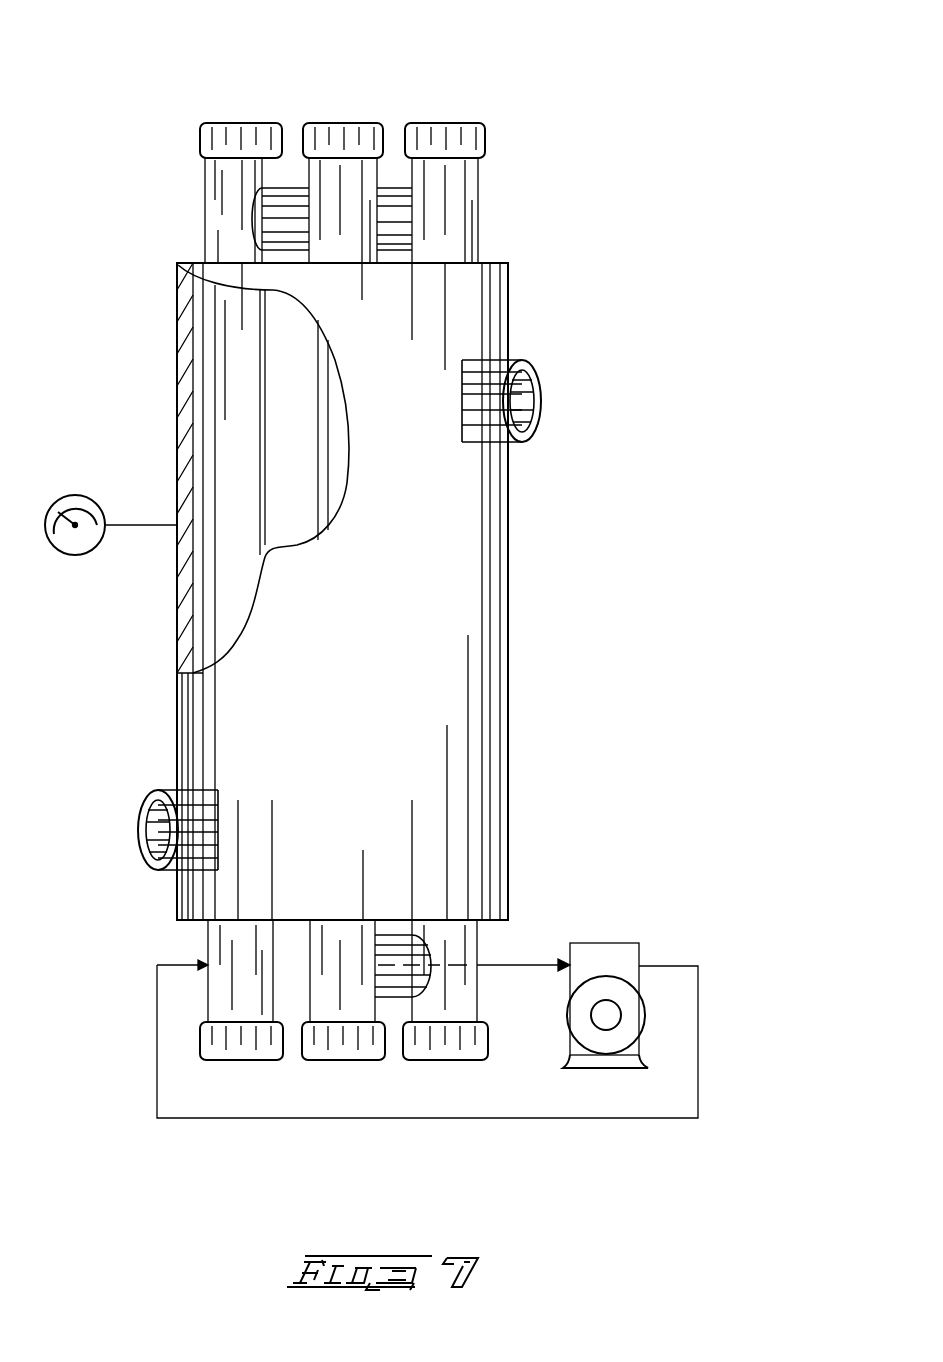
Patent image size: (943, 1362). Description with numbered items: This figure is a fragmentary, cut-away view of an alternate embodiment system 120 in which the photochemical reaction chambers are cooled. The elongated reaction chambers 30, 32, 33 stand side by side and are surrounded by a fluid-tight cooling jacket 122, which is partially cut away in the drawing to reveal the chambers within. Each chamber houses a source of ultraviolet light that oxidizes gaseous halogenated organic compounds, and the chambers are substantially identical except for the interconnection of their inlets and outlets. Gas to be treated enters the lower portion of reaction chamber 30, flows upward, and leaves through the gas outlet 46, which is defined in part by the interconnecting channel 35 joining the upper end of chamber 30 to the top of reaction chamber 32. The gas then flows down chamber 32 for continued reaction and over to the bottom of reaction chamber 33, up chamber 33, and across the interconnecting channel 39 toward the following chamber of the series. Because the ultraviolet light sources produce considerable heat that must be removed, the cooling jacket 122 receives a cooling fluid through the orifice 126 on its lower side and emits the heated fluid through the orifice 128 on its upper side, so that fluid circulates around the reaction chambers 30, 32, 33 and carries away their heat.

The fluid treatment system 120 is at (488, 43).
The cooling jacket 122 is at (488, 333).
The photochemical reaction chamber 30 is at (238, 132).
The interconnecting channel 35 is at (295, 183).
The photochemical reaction chamber 32 is at (340, 132).
The interconnecting channel 39 is at (390, 185).
The gas outlet 46 is at (383, 223).
The photochemical reaction chamber 33 is at (447, 137).
The orifice 128 is at (530, 396).
The orifice 126 is at (145, 802).